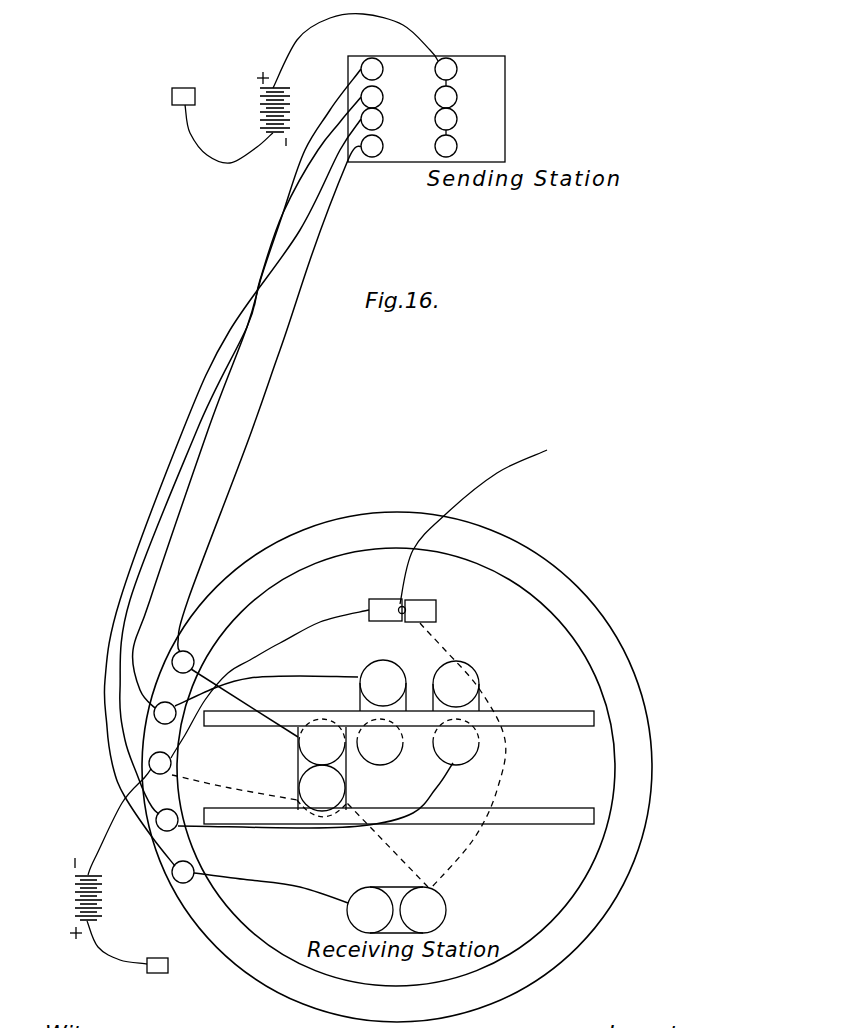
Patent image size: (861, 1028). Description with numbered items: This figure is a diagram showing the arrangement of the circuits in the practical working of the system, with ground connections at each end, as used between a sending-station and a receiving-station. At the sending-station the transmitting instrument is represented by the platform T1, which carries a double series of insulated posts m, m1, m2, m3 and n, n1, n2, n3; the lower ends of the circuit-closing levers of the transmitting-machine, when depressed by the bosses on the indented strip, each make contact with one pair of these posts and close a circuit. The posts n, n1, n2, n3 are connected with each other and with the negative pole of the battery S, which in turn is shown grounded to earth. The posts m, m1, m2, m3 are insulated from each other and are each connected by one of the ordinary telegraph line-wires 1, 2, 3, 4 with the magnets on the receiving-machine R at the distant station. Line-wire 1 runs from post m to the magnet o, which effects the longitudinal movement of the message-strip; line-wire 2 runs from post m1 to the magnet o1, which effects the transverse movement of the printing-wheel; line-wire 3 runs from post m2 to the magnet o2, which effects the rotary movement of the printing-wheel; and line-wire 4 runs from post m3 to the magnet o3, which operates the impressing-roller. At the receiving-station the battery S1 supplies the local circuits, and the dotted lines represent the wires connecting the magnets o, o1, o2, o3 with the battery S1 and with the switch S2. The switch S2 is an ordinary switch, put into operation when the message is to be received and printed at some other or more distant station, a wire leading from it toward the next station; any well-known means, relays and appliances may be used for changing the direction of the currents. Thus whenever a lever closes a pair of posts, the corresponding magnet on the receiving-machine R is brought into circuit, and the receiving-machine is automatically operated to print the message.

The platform T1 is at (436, 109).
The post m is at (380, 69).
The post m1 is at (381, 97).
The post m2 is at (382, 119).
The post m3 is at (382, 146).
The post n is at (451, 69).
The post n1 is at (453, 94).
The post n2 is at (454, 119).
The post n3 is at (454, 143).
The battery S is at (300, 89).
The battery S1 is at (129, 871).
The switch S2 is at (359, 668).
The line-wire 1 is at (247, 388).
The line-wire 2 is at (232, 455).
The line-wire 3 is at (280, 492).
The line-wire 4 is at (269, 441).
The receiving-machine R is at (397, 767).
The magnet o is at (381, 712).
The magnet o1 is at (320, 868).
The magnet o2 is at (456, 713).
The magnet o3 is at (259, 768).